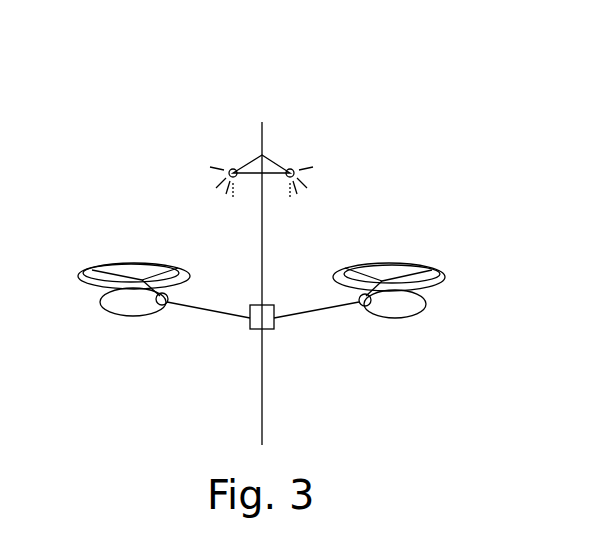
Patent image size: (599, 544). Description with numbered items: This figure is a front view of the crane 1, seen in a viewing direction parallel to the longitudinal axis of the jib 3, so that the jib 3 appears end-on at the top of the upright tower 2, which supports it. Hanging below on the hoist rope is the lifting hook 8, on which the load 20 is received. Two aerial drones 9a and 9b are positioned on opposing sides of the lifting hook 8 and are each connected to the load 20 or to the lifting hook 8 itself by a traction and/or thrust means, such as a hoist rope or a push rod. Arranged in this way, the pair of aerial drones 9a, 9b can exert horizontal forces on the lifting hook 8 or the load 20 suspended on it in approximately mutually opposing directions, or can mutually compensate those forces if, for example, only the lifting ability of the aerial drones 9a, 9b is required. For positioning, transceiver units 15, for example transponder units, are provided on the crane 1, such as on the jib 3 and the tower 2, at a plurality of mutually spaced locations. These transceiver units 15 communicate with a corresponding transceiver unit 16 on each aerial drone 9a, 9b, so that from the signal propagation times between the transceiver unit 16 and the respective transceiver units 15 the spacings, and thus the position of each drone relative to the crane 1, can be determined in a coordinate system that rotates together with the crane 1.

The crane 1 is at (268, 153).
The tower 2 is at (262, 402).
The jib 3 is at (245, 166).
The lifting hook 8 is at (267, 302).
The aerial drone 9a is at (103, 307).
The aerial drone 9b is at (424, 306).
The transceiver units 15 is at (226, 170).
The transceiver unit 16 is at (168, 293).
The load 20 is at (250, 329).